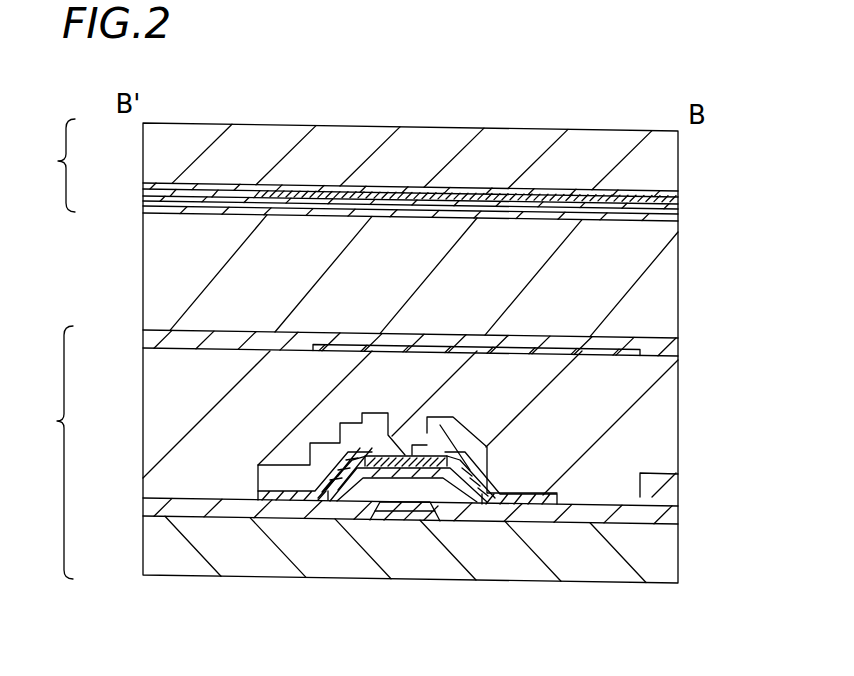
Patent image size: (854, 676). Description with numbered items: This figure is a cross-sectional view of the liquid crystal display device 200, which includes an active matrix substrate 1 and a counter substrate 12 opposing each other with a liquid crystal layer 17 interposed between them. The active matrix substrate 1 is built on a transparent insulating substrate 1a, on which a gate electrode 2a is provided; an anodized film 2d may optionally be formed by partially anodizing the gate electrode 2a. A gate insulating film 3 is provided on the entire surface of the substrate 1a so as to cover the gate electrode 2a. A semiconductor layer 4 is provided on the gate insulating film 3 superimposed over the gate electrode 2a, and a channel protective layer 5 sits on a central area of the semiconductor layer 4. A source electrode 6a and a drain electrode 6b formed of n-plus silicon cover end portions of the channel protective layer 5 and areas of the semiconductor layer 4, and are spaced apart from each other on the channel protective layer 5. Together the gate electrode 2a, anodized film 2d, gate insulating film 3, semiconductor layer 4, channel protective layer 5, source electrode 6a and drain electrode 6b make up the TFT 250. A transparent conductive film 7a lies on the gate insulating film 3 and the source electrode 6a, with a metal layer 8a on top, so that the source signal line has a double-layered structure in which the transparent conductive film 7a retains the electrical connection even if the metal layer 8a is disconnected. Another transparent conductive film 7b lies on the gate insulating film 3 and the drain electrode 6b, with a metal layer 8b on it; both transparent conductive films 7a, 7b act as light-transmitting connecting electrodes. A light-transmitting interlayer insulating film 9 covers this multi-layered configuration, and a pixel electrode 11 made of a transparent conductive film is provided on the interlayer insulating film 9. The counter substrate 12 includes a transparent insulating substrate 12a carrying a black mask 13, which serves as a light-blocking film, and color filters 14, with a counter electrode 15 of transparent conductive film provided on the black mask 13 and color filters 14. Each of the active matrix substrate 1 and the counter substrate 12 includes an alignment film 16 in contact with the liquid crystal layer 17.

The liquid crystal display device 200 is at (698, 33).
The counter substrate 12 is at (49, 165).
The transparent insulating substrate 12a is at (607, 152).
The black mask 13 is at (238, 183).
The color filters 14 is at (396, 190).
The counter electrode 15 is at (681, 205).
The alignment film 16 is at (679, 345).
The liquid crystal layer 17 is at (162, 245).
The TFT 250 is at (356, 390).
The pixel electrode 11 is at (624, 358).
The interlayer insulating film 9 is at (668, 393).
The active matrix substrate 1 is at (54, 452).
The transparent insulating substrate 1a is at (668, 560).
The gate insulating film 3 is at (668, 512).
The gate electrode 2a is at (395, 520).
The anodized film 2d is at (448, 520).
The semiconductor layer 4 is at (371, 488).
The channel protective layer 5 is at (418, 468).
The source electrode 6a is at (338, 500).
The drain electrode 6b is at (482, 500).
The transparent conductive film 7a is at (289, 500).
The transparent conductive film 7b is at (537, 502).
The metal layer 8a is at (257, 482).
The metal layer 8b is at (470, 440).